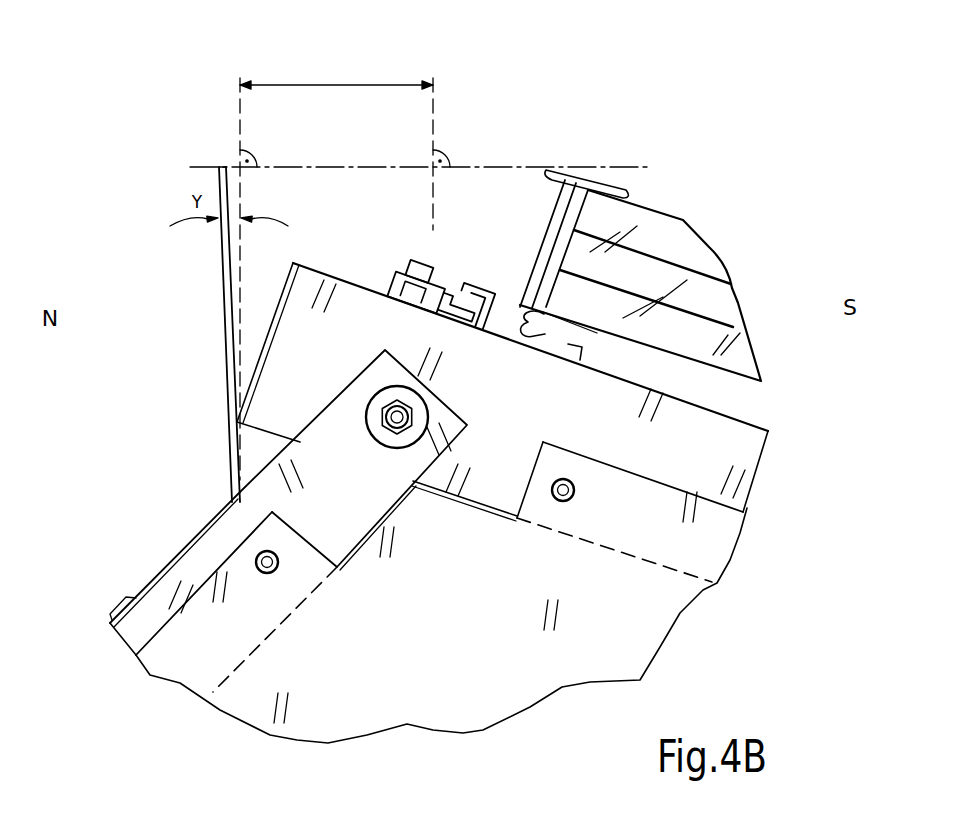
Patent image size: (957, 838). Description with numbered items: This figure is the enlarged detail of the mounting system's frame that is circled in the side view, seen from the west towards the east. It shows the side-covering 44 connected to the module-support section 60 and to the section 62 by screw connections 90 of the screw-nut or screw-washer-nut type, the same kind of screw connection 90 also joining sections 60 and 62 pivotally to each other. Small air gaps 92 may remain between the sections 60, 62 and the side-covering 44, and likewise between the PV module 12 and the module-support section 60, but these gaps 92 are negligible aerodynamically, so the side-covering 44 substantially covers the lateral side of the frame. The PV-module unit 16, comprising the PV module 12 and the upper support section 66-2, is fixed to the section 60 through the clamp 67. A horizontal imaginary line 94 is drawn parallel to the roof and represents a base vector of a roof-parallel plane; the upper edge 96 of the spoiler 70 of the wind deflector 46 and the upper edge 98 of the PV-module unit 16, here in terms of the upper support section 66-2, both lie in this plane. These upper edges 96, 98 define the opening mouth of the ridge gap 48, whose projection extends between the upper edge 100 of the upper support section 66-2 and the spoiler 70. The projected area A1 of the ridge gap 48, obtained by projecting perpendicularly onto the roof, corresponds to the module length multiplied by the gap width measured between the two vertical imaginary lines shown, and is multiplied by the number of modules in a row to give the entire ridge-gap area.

The area A1 is at (320, 84).
The upper edge 96 is at (216, 152).
The ridge gap 48 is at (339, 188).
The imaginary line 94 is at (512, 165).
The spoiler 70 is at (222, 333).
The upper support section 66-2 is at (626, 190).
The upper edge 98 is at (572, 158).
The PV-module unit 16 is at (682, 213).
The PV module 12 is at (708, 247).
The module-support section 60 is at (738, 414).
The gaps 92 is at (637, 357).
The clamp 67 is at (393, 280).
The upper edge 100 is at (420, 320).
The section 62 is at (447, 405).
The wind deflector 46 is at (158, 554).
The screw connections 90 is at (438, 250).
The side-covering 44 is at (467, 638).